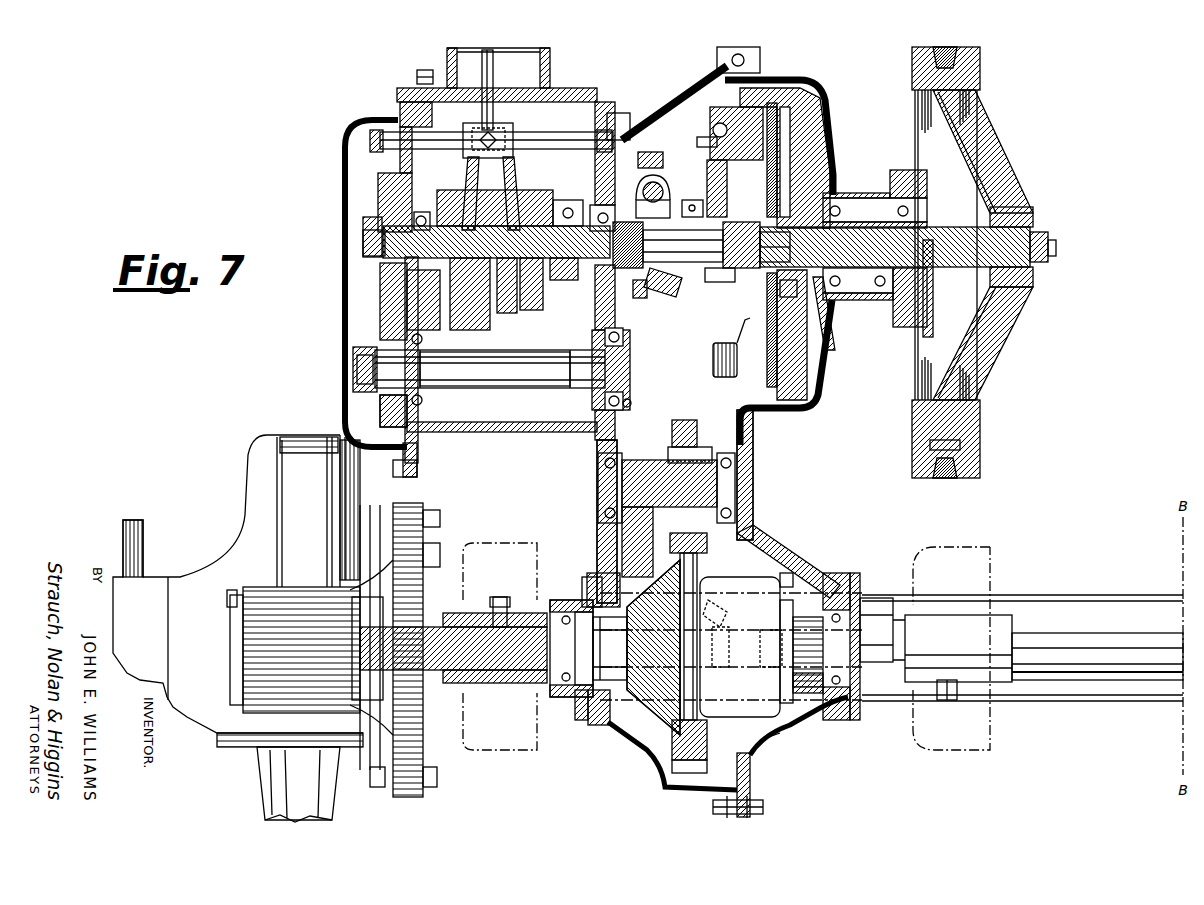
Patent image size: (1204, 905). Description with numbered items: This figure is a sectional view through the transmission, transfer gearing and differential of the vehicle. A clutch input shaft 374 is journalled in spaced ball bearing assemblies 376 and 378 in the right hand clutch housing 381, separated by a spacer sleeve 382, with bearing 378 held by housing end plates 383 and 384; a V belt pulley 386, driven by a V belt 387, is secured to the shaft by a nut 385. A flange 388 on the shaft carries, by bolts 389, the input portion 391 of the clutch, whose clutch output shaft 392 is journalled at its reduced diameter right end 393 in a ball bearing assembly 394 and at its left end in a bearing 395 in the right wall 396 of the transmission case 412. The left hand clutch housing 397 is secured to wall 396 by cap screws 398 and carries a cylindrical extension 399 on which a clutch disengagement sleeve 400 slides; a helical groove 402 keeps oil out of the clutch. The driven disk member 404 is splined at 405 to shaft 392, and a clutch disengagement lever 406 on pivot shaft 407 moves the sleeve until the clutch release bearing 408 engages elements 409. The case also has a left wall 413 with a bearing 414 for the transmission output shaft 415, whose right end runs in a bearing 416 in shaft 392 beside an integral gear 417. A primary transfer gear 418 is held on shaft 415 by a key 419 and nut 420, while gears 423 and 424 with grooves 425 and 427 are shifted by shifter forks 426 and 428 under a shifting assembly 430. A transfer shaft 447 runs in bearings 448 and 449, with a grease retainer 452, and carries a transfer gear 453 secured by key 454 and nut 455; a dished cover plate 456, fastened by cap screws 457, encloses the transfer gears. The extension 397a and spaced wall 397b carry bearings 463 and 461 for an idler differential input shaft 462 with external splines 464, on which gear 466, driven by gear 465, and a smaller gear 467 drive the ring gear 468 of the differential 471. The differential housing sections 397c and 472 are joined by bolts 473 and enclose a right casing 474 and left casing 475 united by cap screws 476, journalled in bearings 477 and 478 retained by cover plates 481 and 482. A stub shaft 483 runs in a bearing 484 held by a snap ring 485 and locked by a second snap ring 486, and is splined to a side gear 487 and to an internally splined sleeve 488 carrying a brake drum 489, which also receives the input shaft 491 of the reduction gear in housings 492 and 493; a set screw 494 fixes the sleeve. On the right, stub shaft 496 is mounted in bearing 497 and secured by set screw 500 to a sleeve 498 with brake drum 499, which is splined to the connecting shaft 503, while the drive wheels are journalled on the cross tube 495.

The clutch input shaft 374 is at (895, 239).
The ball bearing assembly 376 is at (838, 193).
The ball bearing assembly 378 is at (890, 207).
The right hand clutch housing 381 is at (830, 125).
The spacer sleeve 382 is at (880, 278).
The housing end plate 383 is at (903, 325).
The housing end plate 384 is at (918, 300).
The nut 385 is at (1038, 230).
The V belt pulley 386 is at (990, 153).
The V belt 387 is at (940, 478).
The flange 388 is at (812, 190).
The bolts 389 is at (822, 300).
The input portion of the clutch assembly 391 is at (822, 377).
The clutch output shaft 392 is at (645, 238).
The reduced diameter right end 393 is at (775, 270).
The ball bearing assembly 394 is at (778, 290).
The bearing 395 is at (597, 205).
The right wall 396 is at (600, 88).
The left hand clutch housing 397 is at (705, 72).
The extension 397a is at (595, 550).
The spaced wall 397b is at (753, 528).
The left section of the differential housing 397c is at (635, 768).
The cap screws 398 is at (617, 123).
The cylindrical extension 399 is at (680, 248).
The clutch disengagement sleeve 400 is at (672, 205).
The helical groove 402 is at (641, 296).
The driven disk member 404 is at (762, 183).
The spline 405 is at (727, 270).
The clutch disengagement lever 406 is at (665, 188).
The pivot shaft 407 is at (663, 160).
The clutch release bearing 408 is at (672, 296).
The clutch elements 409 is at (705, 210).
The transmission case 412 is at (462, 432).
The left wall 413 is at (455, 130).
The bearing 414 is at (432, 296).
The transmission output shaft 415 is at (455, 243).
The bearing 416 is at (563, 210).
The integral gear 417 is at (570, 280).
The primary transfer gear 418 is at (388, 178).
The key 419 is at (385, 244).
The nut 420 is at (372, 218).
The gear 423 is at (490, 308).
The gear 424 is at (531, 312).
The groove 425 is at (465, 278).
The shifter fork 426 is at (464, 182).
The groove 427 is at (505, 275).
The shifter fork 428 is at (513, 180).
The shifting assembly 430 is at (488, 75).
The transfer shaft 447 is at (468, 352).
The bearing 448 is at (424, 403).
The bearing 449 is at (632, 403).
The grease retainer 452 is at (595, 332).
The transfer gear 453 is at (382, 422).
The key 454 is at (490, 369).
The nut 455 is at (365, 347).
The dished cover plate 456 is at (343, 283).
The cap screws 457 is at (417, 466).
The right bearing 461 is at (740, 454).
The idler differential input shaft 462 is at (600, 487).
The left bearing 463 is at (603, 460).
The external splines 464 is at (669, 518).
The gear 465 is at (715, 343).
The gear 466 is at (652, 428).
The smaller gear 467 is at (692, 450).
The ring gear 468 is at (690, 773).
The differential 471 is at (762, 725).
The right section of the differential housing 472 is at (812, 728).
The bolts 473 is at (713, 810).
The right casing 474 is at (808, 652).
The left casing 475 is at (662, 712).
The cap screws 476 is at (780, 576).
The bearing 477 is at (835, 576).
The bearing 478 is at (636, 675).
The cover plate 481 is at (861, 716).
The cover plate 482 is at (599, 726).
The stub shaft 483 is at (569, 648).
The bearing 484 is at (578, 705).
The snap ring 485 is at (583, 590).
The snap ring 486 is at (628, 652).
The side gear 487 is at (730, 610).
The internally splined sleeve 488 is at (505, 683).
The brake drum 489 is at (493, 543).
The left axle reduction gearing input shaft 491 is at (445, 680).
The reduction gear housing 492 is at (315, 587).
The reduction gear housing 493 is at (243, 525).
The set screw 494 is at (499, 597).
The cross tube 495 is at (1090, 595).
The stub shaft 496 is at (808, 694).
The bearing 497 is at (878, 598).
The internally splined sleeve 498 is at (916, 649).
The brake drum 499 is at (950, 547).
The set screw 500 is at (945, 702).
The right hand connecting shaft 503 is at (1130, 633).